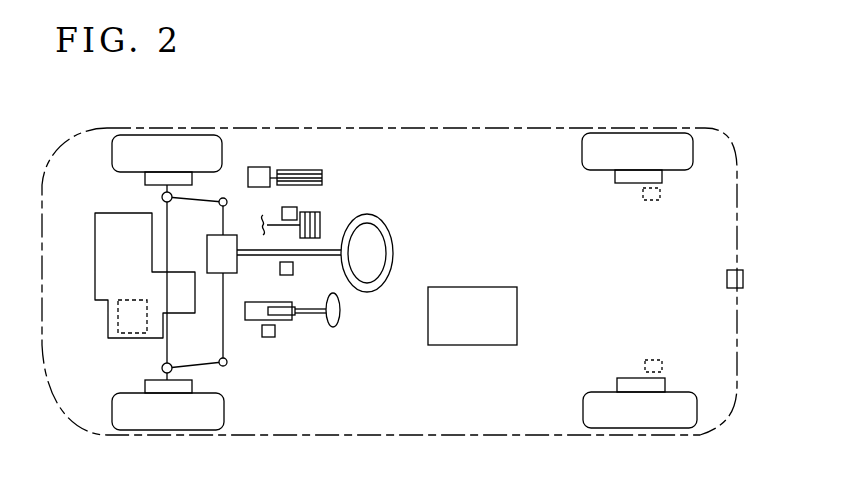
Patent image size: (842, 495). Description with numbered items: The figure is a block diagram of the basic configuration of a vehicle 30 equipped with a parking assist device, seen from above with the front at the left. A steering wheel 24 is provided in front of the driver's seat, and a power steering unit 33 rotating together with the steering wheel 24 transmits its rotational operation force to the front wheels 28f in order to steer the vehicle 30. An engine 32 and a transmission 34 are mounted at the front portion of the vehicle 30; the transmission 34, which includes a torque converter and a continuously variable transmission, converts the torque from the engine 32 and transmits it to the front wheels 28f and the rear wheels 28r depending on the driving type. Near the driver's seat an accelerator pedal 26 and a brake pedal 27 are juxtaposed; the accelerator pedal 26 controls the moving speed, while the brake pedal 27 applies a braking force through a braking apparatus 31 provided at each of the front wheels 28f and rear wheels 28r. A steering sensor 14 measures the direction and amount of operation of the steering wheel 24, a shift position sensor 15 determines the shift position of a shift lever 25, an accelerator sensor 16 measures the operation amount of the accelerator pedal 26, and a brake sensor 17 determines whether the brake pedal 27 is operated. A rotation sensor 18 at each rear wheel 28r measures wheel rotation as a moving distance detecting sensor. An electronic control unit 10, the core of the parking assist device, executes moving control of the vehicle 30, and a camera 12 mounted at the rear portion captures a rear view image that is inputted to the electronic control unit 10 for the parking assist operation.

The electronic control unit (ECU) 10 is at (472, 287).
The camera 12 is at (727, 278).
The steering sensor 14 is at (283, 275).
The shift position sensor 15 is at (276, 332).
The accelerator sensor 16 is at (262, 167).
The brake sensor 17 is at (282, 213).
The rotation sensor 18 is at (652, 200).
The steering wheel 24 is at (393, 250).
The shift lever 25 is at (340, 312).
The accelerator pedal 26 is at (310, 170).
The brake pedal 27 is at (320, 218).
The front wheels 28f is at (168, 135).
The rear wheels 28r is at (637, 133).
The vehicle 30 is at (487, 128).
The braking apparatus 31 is at (145, 178).
The engine 32 is at (135, 340).
The power steering unit 33 is at (207, 262).
The transmission 34 is at (118, 318).